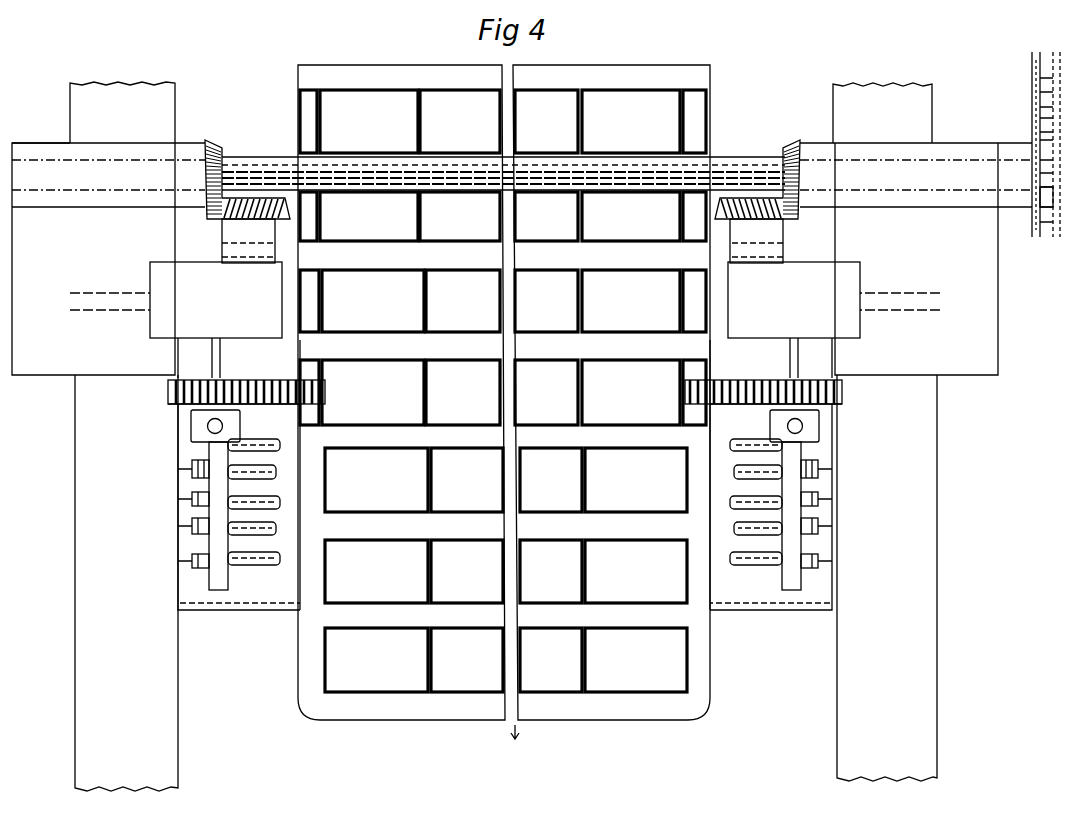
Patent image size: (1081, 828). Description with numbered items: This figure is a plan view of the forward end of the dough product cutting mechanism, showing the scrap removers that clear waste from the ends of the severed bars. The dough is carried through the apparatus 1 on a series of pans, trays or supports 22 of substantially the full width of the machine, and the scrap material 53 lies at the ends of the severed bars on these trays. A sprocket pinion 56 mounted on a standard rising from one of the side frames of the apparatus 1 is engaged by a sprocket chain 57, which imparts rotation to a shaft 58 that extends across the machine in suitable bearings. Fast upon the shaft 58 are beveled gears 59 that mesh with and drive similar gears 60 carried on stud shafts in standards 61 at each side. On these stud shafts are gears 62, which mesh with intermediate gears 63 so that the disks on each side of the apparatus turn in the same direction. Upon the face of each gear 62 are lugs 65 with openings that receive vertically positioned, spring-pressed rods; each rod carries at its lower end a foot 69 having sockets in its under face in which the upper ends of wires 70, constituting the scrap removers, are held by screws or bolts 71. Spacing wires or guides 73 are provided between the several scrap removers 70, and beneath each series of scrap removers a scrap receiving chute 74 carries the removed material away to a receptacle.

The apparatus 1 is at (70, 108).
The pans, trays or supports 22 is at (530, 72).
The scrap material 53 is at (306, 242).
The sprocket pinion 56 is at (1044, 200).
The sprocket chain 57 is at (1032, 72).
The shaft 58 is at (270, 160).
The beveled gears 59 is at (216, 145).
The gears 60 is at (222, 238).
The standards 61 is at (150, 278).
The gears 62 is at (168, 393).
The intermediate gears 63 is at (172, 404).
The lugs 65 is at (190, 428).
The foot 69 is at (212, 490).
The wires 70 is at (250, 440).
The screws or bolts 71 is at (192, 468).
The spacing wires or guides 73 is at (277, 476).
The scrap receiving chute 74 is at (283, 598).